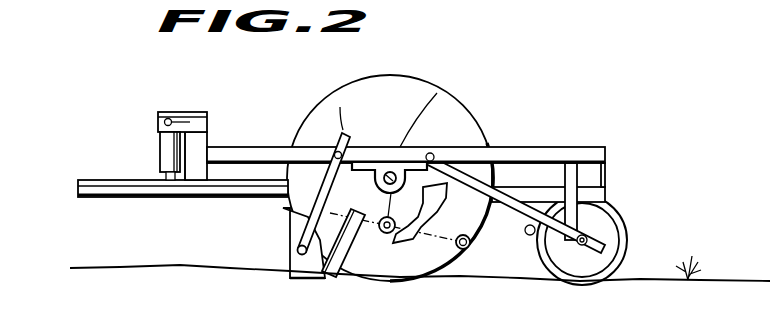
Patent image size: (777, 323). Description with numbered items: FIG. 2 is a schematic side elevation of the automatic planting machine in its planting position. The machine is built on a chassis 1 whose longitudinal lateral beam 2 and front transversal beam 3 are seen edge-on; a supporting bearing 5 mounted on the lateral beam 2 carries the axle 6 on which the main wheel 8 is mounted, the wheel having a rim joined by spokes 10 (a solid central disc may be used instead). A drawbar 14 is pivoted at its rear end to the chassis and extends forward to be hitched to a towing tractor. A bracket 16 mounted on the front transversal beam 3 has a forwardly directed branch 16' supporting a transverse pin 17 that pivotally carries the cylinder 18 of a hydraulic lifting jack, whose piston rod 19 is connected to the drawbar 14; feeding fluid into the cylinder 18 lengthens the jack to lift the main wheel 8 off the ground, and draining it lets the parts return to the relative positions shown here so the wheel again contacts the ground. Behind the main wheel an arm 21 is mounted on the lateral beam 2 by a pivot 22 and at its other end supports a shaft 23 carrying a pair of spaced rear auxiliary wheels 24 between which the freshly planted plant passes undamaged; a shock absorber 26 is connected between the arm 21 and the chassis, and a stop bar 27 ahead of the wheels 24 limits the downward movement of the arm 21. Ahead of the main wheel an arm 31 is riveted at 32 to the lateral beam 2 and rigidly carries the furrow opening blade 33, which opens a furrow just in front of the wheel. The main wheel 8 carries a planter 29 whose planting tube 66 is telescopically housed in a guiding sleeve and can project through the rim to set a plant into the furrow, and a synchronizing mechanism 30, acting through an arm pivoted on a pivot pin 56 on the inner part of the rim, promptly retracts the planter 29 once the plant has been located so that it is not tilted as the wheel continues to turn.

The chassis 1 is at (590, 180).
The longitudinal lateral beam 2 is at (520, 157).
The front transversal beam 3 is at (200, 181).
The supporting bearing 5 is at (360, 168).
The axle 6 is at (396, 173).
The main wheel 8 is at (411, 67).
The spokes 10 is at (340, 102).
The drawbar 14 is at (103, 197).
The bracket 16 is at (200, 146).
The forwardly directed branch 16' is at (199, 103).
The transverse pin 17 is at (165, 122).
The cylinder 18 is at (165, 143).
The piston rod 19 is at (167, 183).
The arm 21 is at (517, 210).
The pivot 22 is at (431, 155).
The shaft 23 is at (580, 243).
The rear auxiliary wheel 24 is at (623, 217).
The shock absorber 26 is at (603, 180).
The stop bar 27 is at (528, 237).
The planter 29 is at (292, 268).
The synchronizing mechanism 30 is at (392, 247).
The arm 31 is at (327, 185).
The rivet 32 is at (335, 151).
The furrow opening blade 33 is at (295, 235).
The pivot pin 56 is at (462, 250).
The planting tube 66 is at (323, 280).